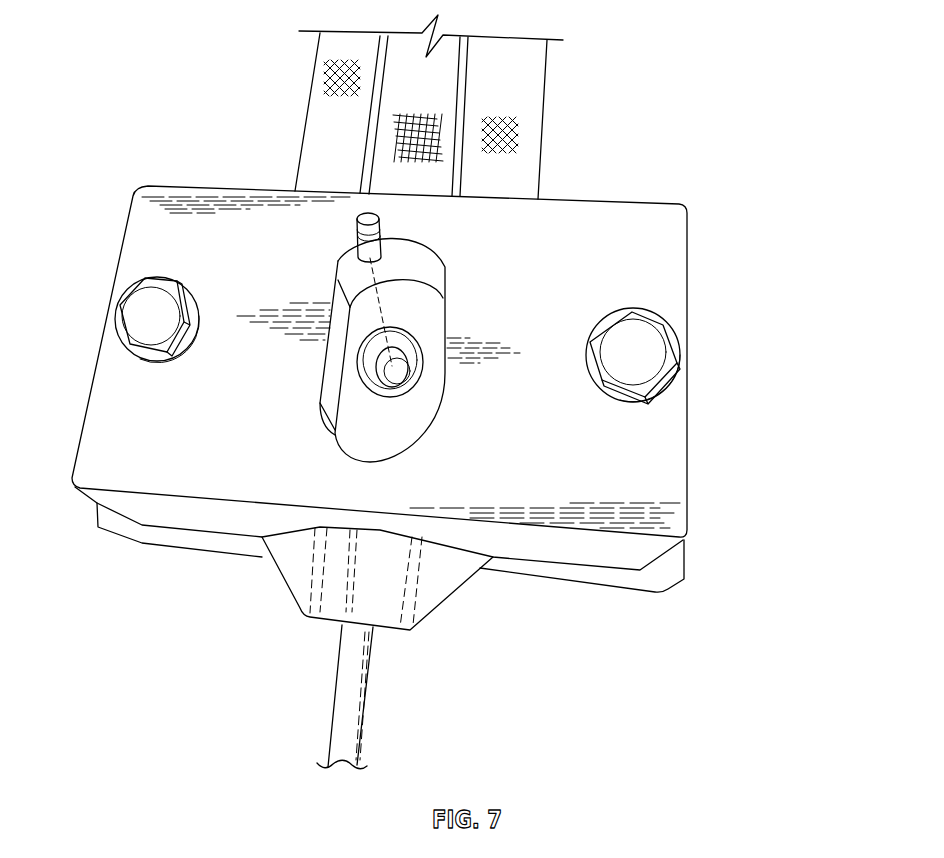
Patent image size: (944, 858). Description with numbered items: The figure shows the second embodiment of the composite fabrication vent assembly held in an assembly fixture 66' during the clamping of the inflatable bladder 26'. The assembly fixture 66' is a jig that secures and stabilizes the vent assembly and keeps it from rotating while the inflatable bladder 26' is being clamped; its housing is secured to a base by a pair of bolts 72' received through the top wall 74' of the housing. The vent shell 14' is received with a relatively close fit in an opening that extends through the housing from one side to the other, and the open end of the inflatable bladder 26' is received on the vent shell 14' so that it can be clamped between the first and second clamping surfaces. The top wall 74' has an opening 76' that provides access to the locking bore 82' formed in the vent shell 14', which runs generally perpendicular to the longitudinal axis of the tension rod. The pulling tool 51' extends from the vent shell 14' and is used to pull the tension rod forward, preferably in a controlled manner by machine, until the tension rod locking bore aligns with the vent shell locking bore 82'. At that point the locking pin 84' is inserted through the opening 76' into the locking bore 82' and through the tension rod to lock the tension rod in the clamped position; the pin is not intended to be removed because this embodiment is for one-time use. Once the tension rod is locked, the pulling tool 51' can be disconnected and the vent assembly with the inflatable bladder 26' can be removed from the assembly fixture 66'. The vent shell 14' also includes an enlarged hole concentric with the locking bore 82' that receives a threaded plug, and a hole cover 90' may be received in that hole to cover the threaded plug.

The inflatable bladder 26' is at (446, 107).
The top wall 74' is at (379, 345).
The bolts 72' is at (395, 333).
The locking pin 84' is at (317, 256).
The vent shell locking bore 82' is at (565, 320).
The hole cover 90' is at (450, 500).
The opening 76' is at (327, 446).
The vent shell 14' is at (379, 558).
The pulling tool 51' is at (328, 697).
The assembly fixture 66' is at (166, 706).